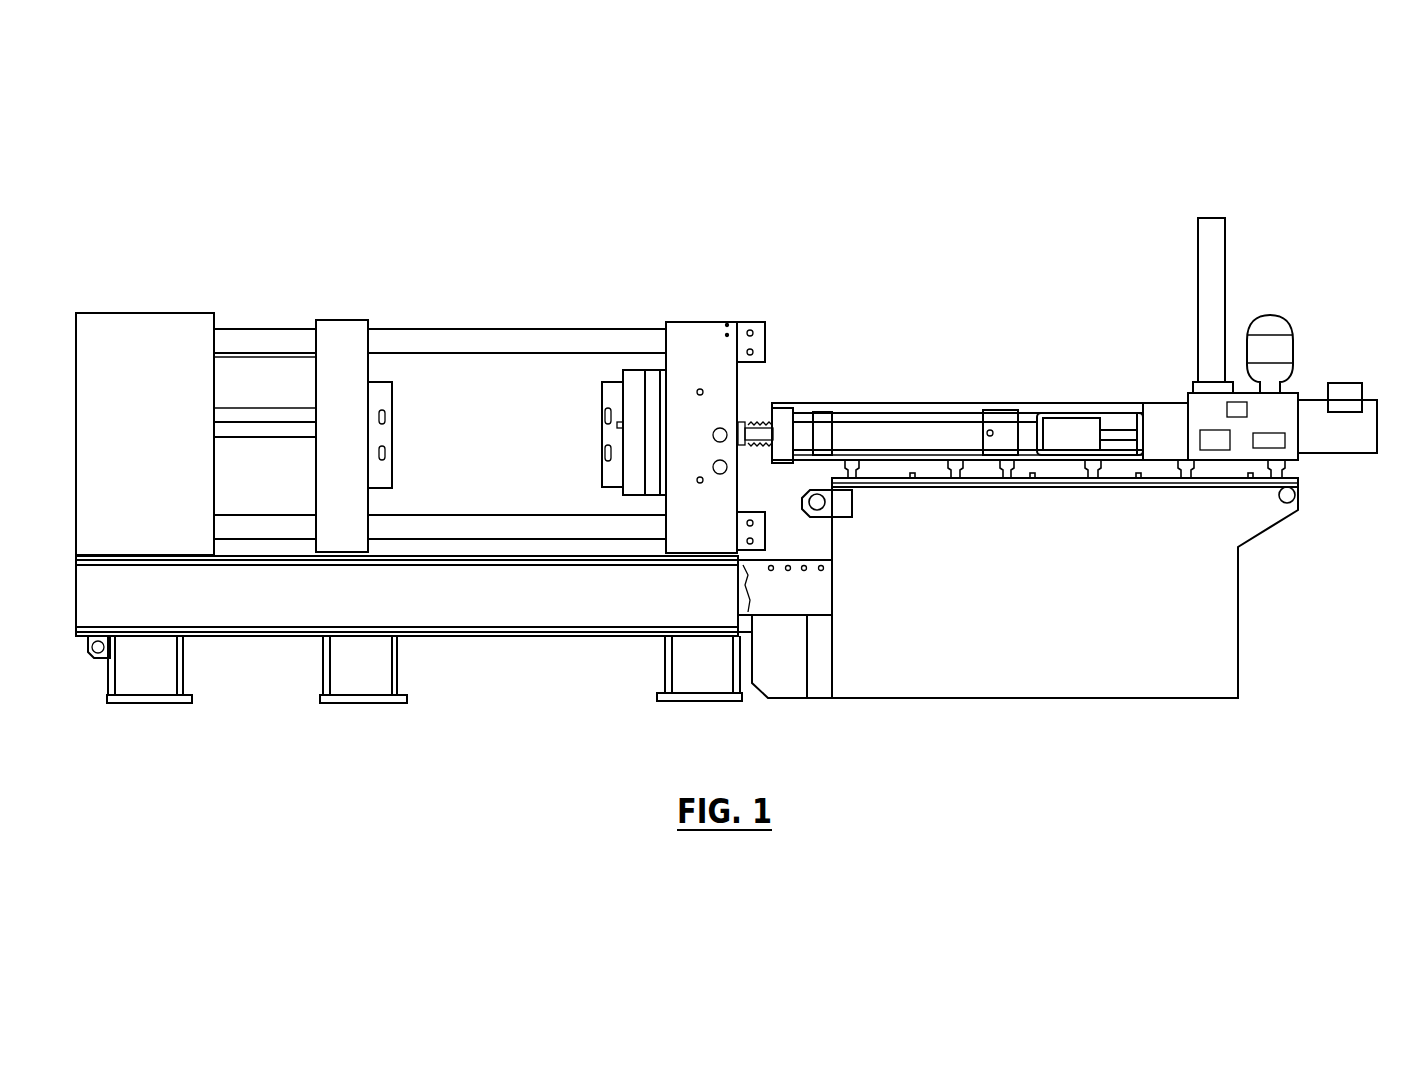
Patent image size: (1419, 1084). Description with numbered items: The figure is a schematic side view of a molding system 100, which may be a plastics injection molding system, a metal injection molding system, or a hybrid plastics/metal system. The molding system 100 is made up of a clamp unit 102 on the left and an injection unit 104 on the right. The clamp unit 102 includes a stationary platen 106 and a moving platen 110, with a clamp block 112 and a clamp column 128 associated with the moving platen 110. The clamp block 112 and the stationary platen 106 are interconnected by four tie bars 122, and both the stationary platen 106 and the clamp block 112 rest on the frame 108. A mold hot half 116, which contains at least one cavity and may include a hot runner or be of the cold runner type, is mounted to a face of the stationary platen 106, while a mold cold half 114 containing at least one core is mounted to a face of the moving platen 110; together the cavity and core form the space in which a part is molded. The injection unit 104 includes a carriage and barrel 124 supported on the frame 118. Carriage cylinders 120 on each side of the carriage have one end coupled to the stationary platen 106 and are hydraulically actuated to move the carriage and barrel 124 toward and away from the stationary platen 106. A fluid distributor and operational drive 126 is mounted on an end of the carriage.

The molding system 100 is at (785, 240).
The clamp unit 102 is at (469, 275).
The injection unit 104 is at (1030, 298).
The stationary platen 106 is at (700, 320).
The frame 108 is at (552, 635).
The moving platen 110 is at (340, 318).
The clamp block 112 is at (155, 313).
The mold cold half 114 is at (393, 455).
The mold hot half 116 is at (602, 438).
The frame 118 is at (1053, 698).
The carriage cylinders 120 is at (922, 433).
The tie bars 122 is at (512, 354).
The carriage and barrel 124 is at (1129, 386).
The fluid distributor and operational drive 126 is at (1315, 469).
The clamp column 128 is at (264, 412).